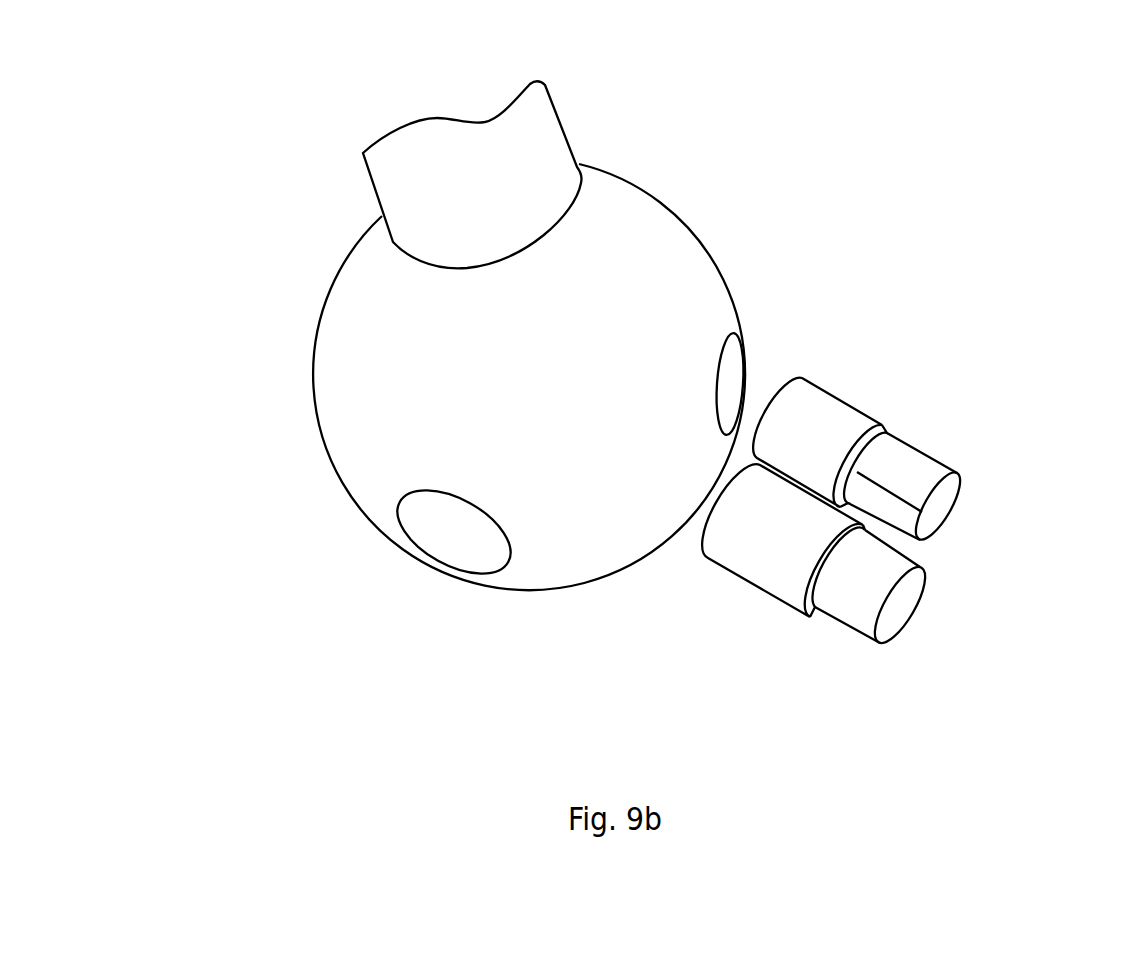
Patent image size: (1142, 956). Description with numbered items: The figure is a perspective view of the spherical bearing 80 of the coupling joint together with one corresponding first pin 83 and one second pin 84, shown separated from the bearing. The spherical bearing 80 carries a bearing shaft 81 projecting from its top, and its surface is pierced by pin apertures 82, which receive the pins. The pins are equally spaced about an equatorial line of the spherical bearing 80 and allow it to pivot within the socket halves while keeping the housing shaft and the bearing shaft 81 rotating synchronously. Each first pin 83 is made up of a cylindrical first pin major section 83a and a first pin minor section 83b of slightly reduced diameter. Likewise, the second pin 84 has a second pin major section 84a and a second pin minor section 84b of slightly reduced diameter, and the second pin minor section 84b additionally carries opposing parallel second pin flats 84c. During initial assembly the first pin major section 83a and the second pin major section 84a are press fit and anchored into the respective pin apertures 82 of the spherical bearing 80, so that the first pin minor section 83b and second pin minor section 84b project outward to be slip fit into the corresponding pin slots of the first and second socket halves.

The spherical bearing 80 is at (298, 269).
The bearing shaft 81 is at (567, 160).
The pin aperture 82 is at (724, 363).
The first pin 83 is at (898, 614).
The first pin major section 83a is at (783, 607).
The first pin minor section 83b is at (870, 580).
The second pin 84 is at (933, 414).
The second pin major section 84a is at (877, 420).
The second pin minor section 84b is at (913, 447).
The second pin flat 84c is at (882, 502).